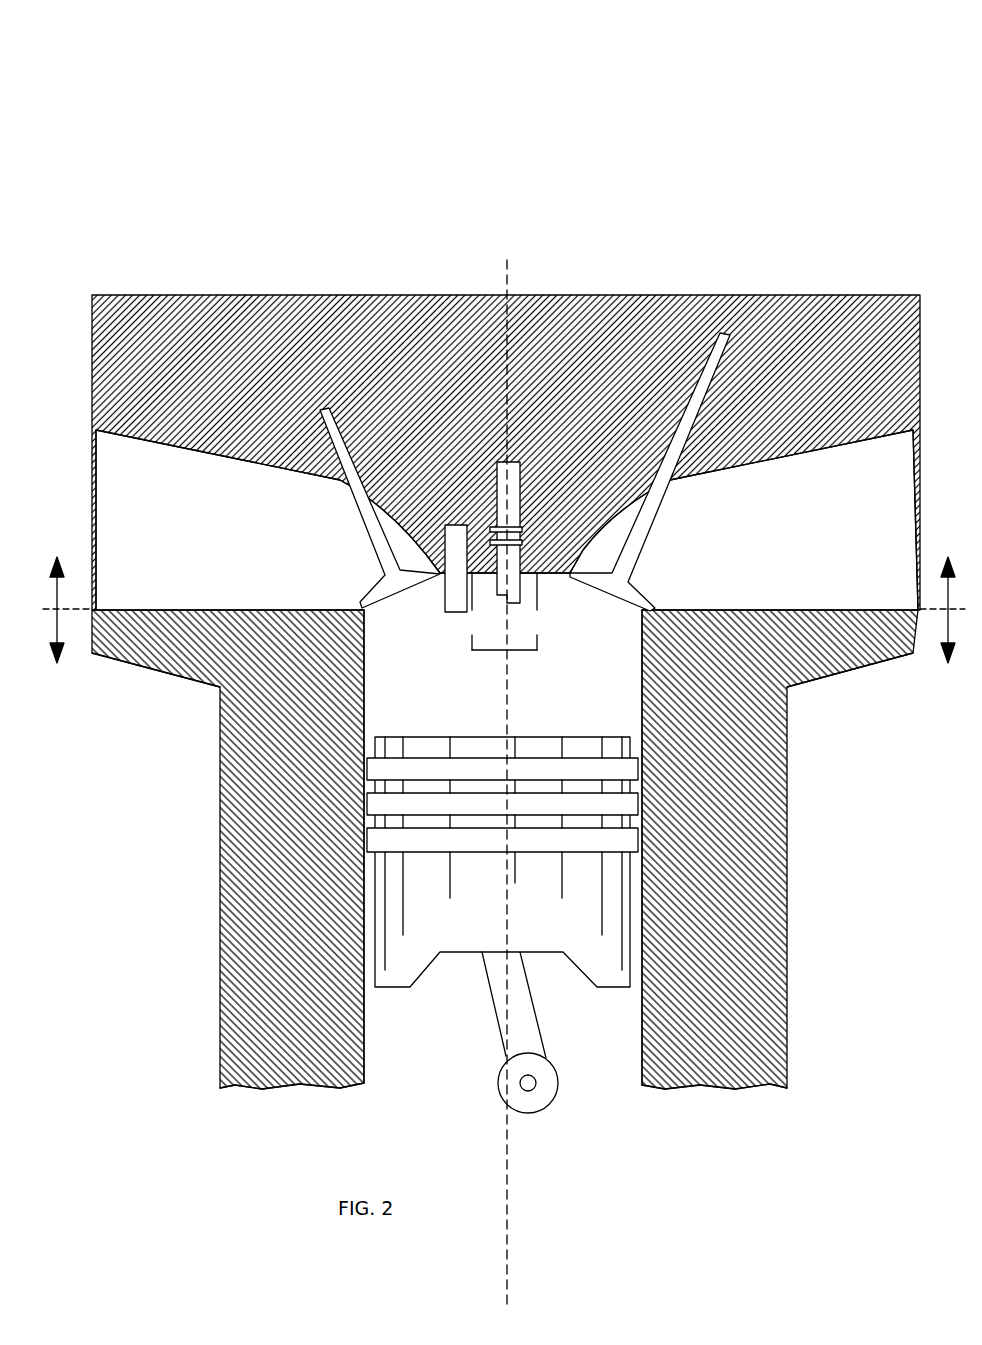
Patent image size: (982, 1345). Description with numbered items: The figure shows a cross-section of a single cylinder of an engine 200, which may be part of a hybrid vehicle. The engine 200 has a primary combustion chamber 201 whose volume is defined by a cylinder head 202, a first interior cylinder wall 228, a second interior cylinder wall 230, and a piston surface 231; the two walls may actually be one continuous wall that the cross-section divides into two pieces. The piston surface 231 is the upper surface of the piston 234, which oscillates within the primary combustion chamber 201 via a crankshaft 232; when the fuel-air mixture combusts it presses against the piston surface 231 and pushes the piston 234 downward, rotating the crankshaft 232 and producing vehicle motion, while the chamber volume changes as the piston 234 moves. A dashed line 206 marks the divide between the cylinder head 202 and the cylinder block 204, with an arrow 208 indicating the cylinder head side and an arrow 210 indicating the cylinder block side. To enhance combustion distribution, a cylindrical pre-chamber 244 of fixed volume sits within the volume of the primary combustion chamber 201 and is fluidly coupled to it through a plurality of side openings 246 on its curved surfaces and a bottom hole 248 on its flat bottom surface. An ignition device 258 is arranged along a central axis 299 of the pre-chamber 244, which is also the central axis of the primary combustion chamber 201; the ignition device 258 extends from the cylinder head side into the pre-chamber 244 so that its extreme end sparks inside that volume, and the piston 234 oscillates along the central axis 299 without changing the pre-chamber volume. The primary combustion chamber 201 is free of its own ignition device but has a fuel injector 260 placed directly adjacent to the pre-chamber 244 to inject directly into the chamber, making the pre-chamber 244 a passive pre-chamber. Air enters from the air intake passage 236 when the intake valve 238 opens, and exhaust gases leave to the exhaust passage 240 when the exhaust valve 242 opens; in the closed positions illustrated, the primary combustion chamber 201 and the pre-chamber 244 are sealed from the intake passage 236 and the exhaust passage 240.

The engine 200 is at (835, 40).
The primary combustion chamber 201 is at (503, 829).
The cylinder head 202 is at (175, 292).
The cylinder block 204 is at (220, 858).
The dashed line 206 is at (80, 614).
The arrow 208 is at (62, 596).
The arrow 210 is at (65, 625).
The first interior cylinder wall 228 is at (365, 1082).
The second interior cylinder wall 230 is at (642, 1082).
The piston surface 231 is at (440, 736).
The crankshaft 232 is at (498, 1090).
The piston 234 is at (467, 950).
The air intake passage 236 is at (744, 520).
The intake valve 238 is at (655, 512).
The exhaust passage 240 is at (268, 520).
The exhaust valve 242 is at (347, 500).
The pre-chamber 244 is at (537, 648).
The side openings 246 is at (472, 637).
The bottom hole 248 is at (507, 652).
The ignition device 258 is at (513, 462).
The fuel injector 260 is at (443, 611).
The central axis 299 is at (515, 1272).